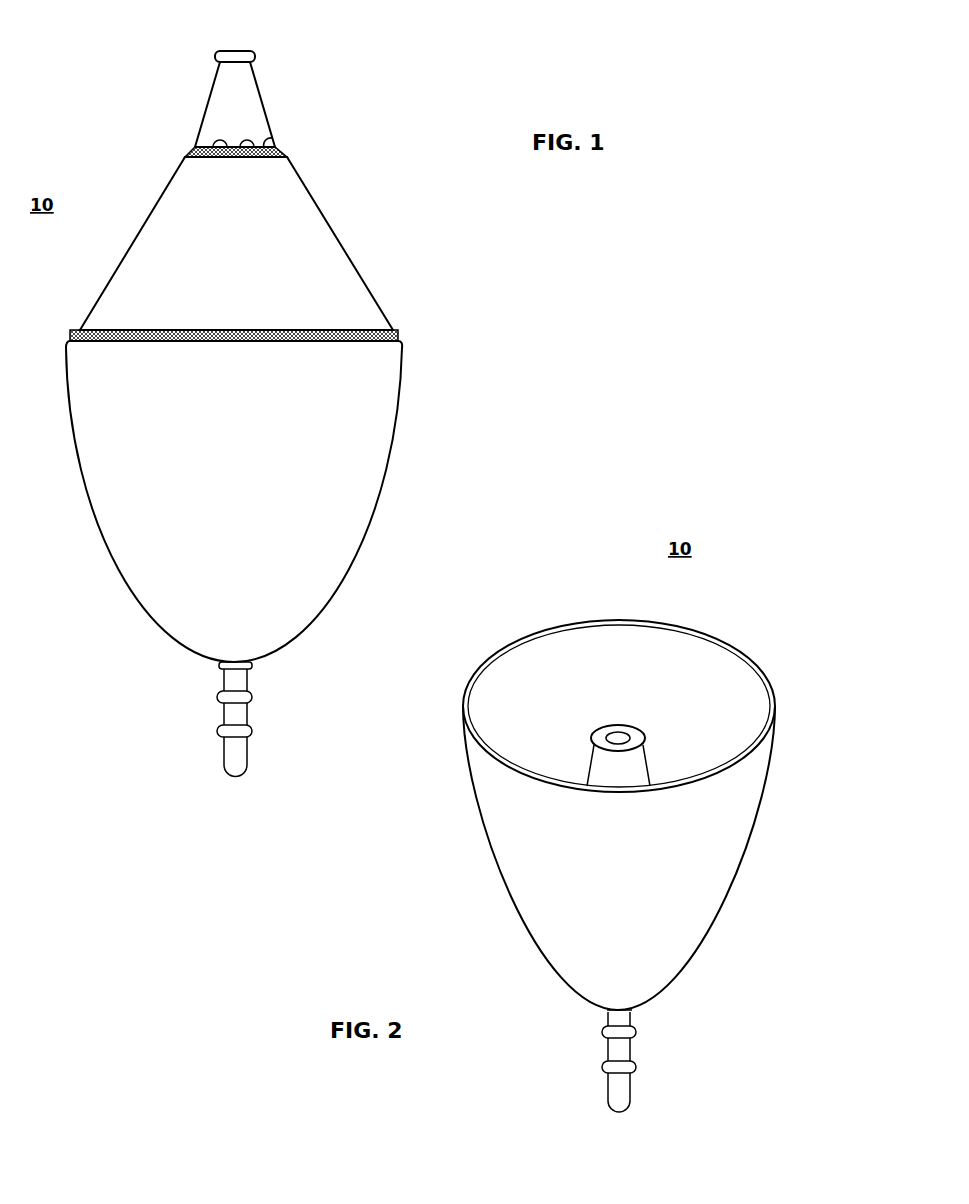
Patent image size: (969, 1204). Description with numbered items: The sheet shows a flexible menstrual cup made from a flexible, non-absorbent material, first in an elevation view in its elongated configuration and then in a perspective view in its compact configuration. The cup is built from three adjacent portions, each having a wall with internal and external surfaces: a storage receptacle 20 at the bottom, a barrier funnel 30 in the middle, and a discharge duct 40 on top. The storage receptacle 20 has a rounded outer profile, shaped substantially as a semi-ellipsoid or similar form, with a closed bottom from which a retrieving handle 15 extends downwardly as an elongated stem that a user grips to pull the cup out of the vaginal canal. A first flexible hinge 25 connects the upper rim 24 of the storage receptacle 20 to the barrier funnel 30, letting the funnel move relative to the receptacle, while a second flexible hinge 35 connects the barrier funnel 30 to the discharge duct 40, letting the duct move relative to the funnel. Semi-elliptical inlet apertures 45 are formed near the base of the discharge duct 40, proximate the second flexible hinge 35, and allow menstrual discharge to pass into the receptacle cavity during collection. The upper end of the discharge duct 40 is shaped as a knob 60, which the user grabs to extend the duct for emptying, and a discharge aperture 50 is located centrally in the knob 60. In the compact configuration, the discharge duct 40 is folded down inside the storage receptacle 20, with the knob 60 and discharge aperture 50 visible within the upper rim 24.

In FIG. 1, the retrieving handle 15 is at (250, 717).
In FIG. 2, the retrieving handle 15 is at (619, 1061).
In FIG. 1, the storage receptacle 20 is at (386, 497).
In FIG. 2, the storage receptacle 20 is at (718, 946).
In FIG. 2, the upper rim 24 is at (558, 627).
In FIG. 1, the first flexible hinge 25 is at (398, 334).
In FIG. 1, the barrier funnel 30 is at (352, 257).
In FIG. 1, the second flexible hinge 35 is at (280, 149).
In FIG. 1, the discharge duct 40 is at (259, 93).
In FIG. 1, the inlet apertures 45 is at (216, 138).
In FIG. 2, the discharge aperture 50 is at (627, 733).
In FIG. 1, the knob 60 is at (215, 56).